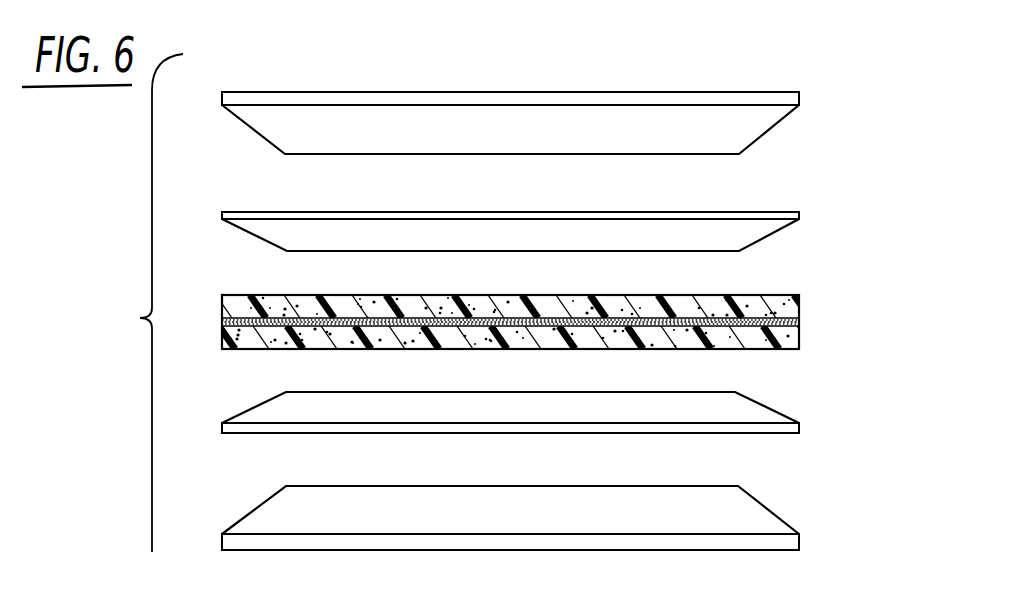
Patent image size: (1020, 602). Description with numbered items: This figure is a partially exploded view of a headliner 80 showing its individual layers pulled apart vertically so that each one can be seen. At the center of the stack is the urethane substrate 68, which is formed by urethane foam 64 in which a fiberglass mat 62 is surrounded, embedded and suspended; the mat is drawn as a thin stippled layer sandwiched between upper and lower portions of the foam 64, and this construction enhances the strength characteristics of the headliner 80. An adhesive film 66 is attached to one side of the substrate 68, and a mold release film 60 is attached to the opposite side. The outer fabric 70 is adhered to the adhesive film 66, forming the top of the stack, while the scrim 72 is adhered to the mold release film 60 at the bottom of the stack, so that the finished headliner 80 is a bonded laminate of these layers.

The headliner 80 is at (304, 76).
The fabric 70 is at (799, 97).
The adhesive film 66 is at (797, 213).
The urethane substrate 68 is at (539, 317).
The urethane foam 64 is at (237, 302).
The fiberglass mat 62 is at (222, 323).
The mold release film 60 is at (799, 431).
The scrim 72 is at (799, 540).